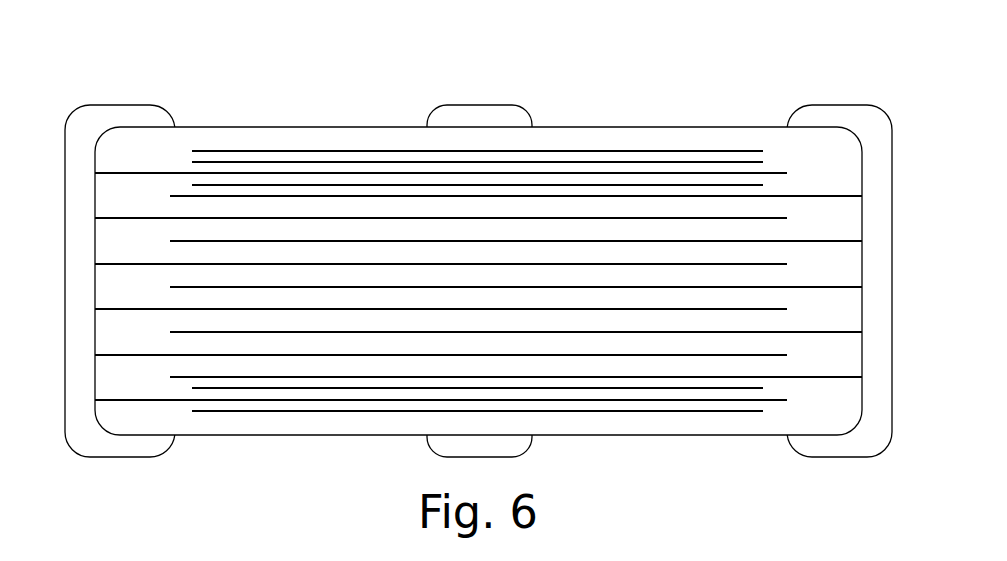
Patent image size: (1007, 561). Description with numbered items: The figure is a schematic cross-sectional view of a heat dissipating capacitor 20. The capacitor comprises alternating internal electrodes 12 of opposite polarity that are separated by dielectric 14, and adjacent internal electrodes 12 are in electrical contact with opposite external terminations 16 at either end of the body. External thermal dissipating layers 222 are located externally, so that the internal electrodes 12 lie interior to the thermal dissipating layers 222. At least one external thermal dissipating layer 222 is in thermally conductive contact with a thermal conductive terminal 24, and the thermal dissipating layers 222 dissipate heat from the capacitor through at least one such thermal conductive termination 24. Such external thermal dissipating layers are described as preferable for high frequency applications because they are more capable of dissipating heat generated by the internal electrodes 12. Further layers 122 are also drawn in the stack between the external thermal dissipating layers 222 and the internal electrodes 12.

The internal electrodes 12 is at (154, 218).
The dielectric 14 is at (150, 415).
The external terminations 16 is at (82, 140).
The heat dissipating capacitor 20 is at (474, 278).
The thermal conductive terminal 24 is at (480, 120).
The inner dummy electrodes 122 is at (583, 187).
The external thermal dissipating layers 222 is at (348, 163).